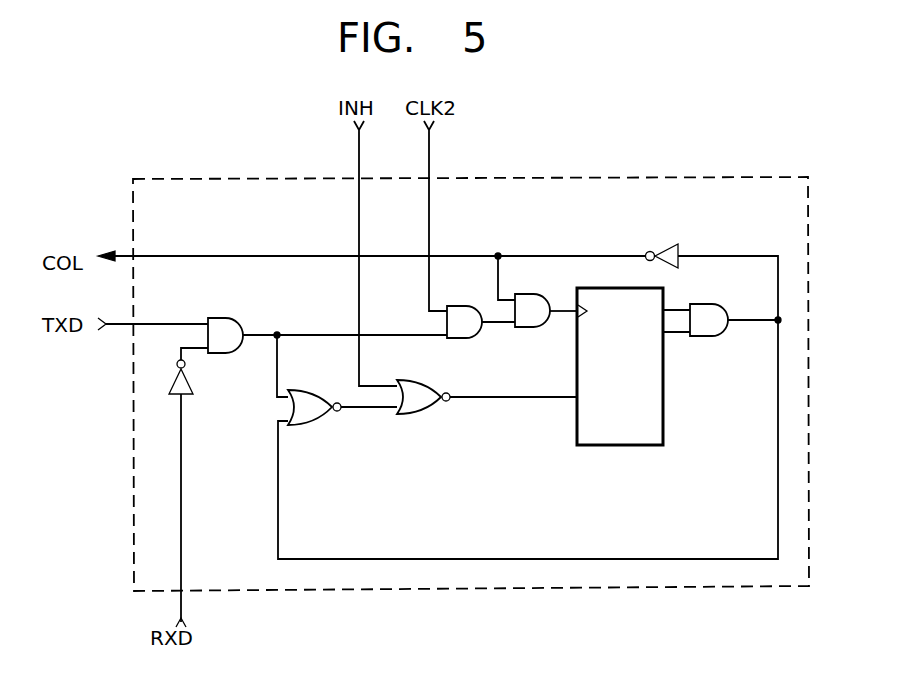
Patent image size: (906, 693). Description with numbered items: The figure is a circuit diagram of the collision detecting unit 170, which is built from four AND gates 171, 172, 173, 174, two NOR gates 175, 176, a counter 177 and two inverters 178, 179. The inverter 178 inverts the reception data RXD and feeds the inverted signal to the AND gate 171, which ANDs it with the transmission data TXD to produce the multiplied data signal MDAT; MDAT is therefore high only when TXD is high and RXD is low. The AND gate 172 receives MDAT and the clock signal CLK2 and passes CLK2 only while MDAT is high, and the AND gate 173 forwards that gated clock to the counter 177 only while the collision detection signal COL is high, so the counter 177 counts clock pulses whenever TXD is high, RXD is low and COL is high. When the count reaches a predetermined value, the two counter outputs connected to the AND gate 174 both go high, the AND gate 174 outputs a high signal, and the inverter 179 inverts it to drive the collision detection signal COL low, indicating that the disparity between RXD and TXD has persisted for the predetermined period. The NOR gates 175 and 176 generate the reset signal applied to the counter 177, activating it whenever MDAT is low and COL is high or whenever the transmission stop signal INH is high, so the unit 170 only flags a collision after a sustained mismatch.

The collision detecting unit 170 is at (735, 177).
The AND gate 171 is at (228, 318).
The AND gate 172 is at (465, 338).
The AND gate 173 is at (540, 327).
The AND gate 174 is at (714, 336).
The NOR gate 175 is at (300, 425).
The NOR gate 176 is at (407, 414).
The counter 177 is at (640, 447).
The inverter 178 is at (194, 383).
The inverter 179 is at (672, 244).